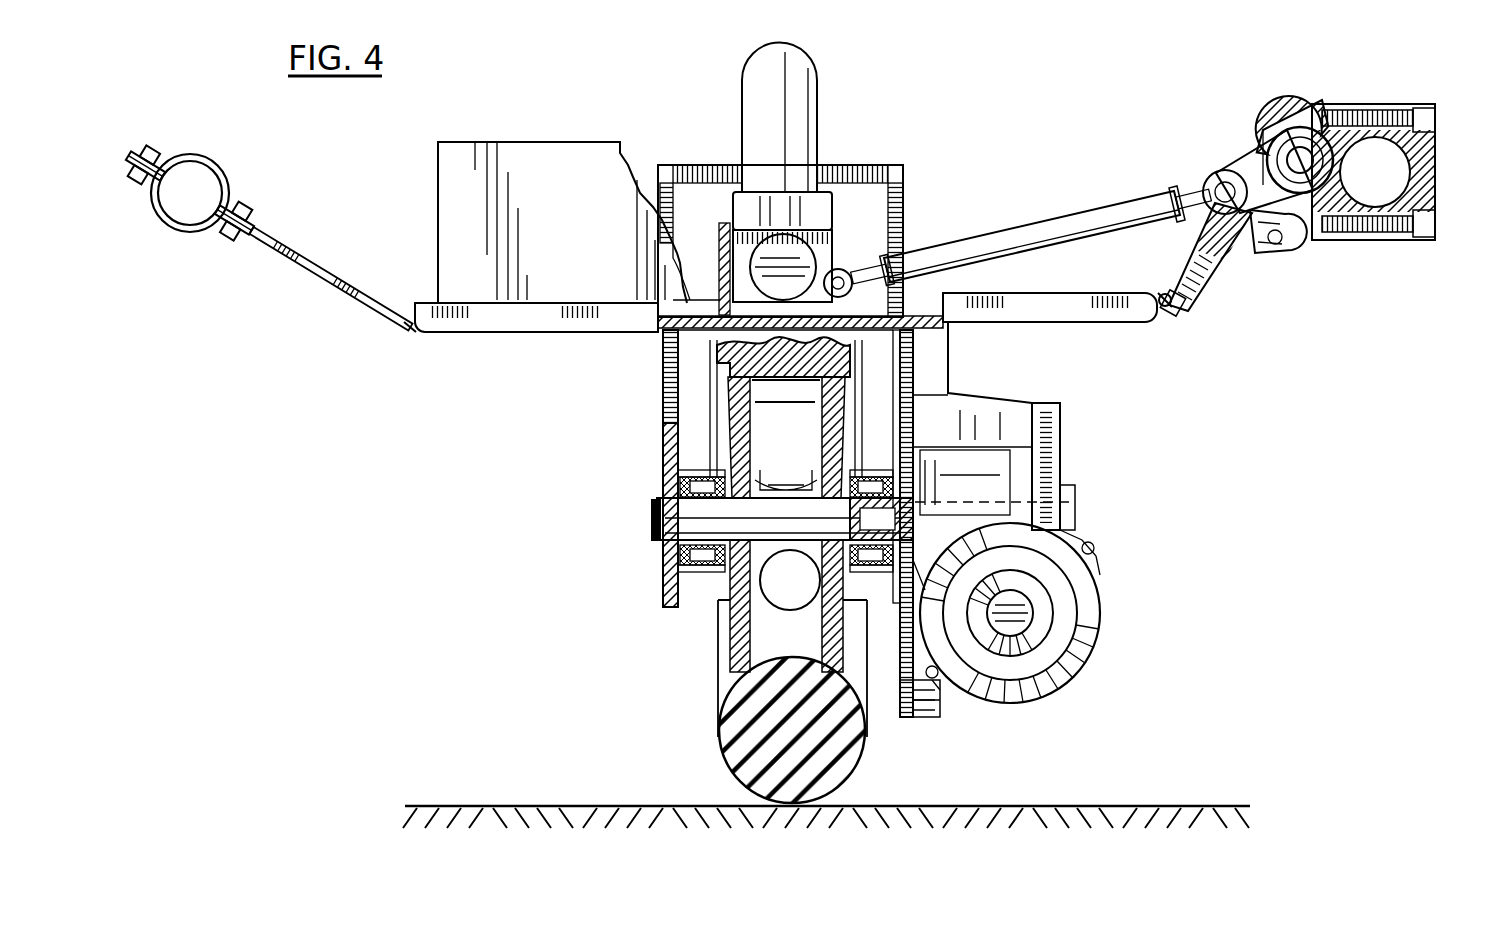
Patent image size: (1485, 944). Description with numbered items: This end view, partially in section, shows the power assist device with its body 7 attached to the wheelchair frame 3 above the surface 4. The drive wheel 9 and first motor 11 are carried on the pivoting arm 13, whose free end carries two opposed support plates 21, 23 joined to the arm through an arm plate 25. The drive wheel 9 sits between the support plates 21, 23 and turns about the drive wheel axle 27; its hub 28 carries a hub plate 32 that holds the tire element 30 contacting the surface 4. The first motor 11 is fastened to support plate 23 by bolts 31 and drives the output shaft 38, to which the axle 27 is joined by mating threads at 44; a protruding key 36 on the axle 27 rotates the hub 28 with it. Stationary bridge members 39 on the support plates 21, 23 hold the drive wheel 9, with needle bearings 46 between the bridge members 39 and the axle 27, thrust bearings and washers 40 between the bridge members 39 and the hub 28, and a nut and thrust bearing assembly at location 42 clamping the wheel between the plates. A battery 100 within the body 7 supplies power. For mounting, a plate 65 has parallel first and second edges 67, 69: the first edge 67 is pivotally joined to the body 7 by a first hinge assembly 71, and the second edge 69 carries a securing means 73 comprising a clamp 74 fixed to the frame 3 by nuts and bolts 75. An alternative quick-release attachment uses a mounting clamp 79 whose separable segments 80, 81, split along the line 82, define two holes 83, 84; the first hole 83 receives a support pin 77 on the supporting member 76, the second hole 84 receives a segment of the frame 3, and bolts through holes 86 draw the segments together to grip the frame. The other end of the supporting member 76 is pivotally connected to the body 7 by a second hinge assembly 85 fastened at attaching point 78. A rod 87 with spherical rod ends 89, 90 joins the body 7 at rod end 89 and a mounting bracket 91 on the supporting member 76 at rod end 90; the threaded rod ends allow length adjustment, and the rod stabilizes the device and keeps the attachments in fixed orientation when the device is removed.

The frame 3 is at (1250, 605).
The surface 4 is at (1100, 801).
The body 7 is at (518, 350).
The drive wheel 9 is at (630, 662).
The first motor 11 is at (1088, 608).
The pivoting arm 13 is at (795, 62).
The support plate 21 is at (905, 722).
The support plate 23 is at (660, 385).
The arm plate 25 is at (852, 170).
The drive wheel axle 27 is at (654, 515).
The hub 28 is at (790, 580).
The tire element 30 is at (730, 736).
The bolts 31 is at (950, 390).
The hub plate 32 is at (735, 385).
The key 36 is at (793, 494).
The output shaft 38 is at (850, 518).
The stationary bridge members 39 is at (664, 470).
The thrust bearings and washers 40 is at (830, 590).
The nut and thrust bearing assembly 42 is at (640, 538).
The mating threads 44 is at (925, 528).
The needle bearings 46 is at (712, 478).
The plate 65 is at (310, 268).
The first edge 67 is at (400, 300).
The second edge 69 is at (243, 254).
The first hinge assembly 71 is at (408, 334).
The securing means 73 is at (166, 246).
The clamp 74 is at (157, 210).
The nuts and bolts 75 is at (150, 138).
The supporting member 76 is at (1212, 275).
The support pin 77 is at (1296, 160).
The attaching point 78 is at (1180, 314).
The mounting clamp 79 is at (1286, 126).
The clamp segment 80 is at (1300, 246).
The clamp segment 81 is at (1398, 242).
The line 82 is at (1375, 172).
The first hole 83 is at (1304, 126).
The second hole 84 is at (1405, 172).
The second hinge assembly 85 is at (1162, 296).
The holes 86 is at (1398, 108).
The rod 87 is at (1020, 240).
The rod end 89 is at (850, 275).
The rod end 90 is at (1222, 175).
The mounting bracket 91 is at (1218, 235).
The battery 100 is at (553, 150).